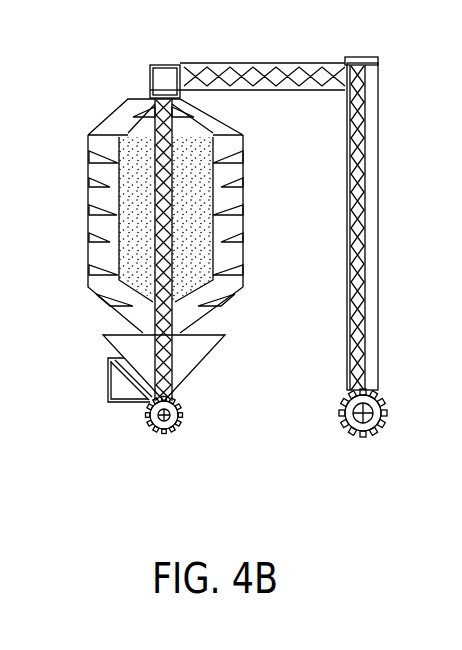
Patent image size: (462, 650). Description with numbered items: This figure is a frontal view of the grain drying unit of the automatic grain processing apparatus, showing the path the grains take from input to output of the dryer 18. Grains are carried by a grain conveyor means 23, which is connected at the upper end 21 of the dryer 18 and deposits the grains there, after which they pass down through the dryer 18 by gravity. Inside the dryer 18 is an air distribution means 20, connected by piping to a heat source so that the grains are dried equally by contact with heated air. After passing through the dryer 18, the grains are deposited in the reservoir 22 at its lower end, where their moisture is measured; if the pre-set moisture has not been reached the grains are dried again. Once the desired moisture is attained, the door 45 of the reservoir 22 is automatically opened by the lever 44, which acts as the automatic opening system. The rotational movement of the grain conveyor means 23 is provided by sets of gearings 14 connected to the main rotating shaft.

The sets of gearings 14 is at (172, 432).
The dryer 18 is at (135, 128).
The air distribution means 20 is at (120, 173).
The upper end 21 is at (145, 97).
The reservoir 22 is at (198, 353).
The grain conveyor means 23 is at (282, 72).
The lever 44 is at (108, 390).
The door 45 is at (130, 405).